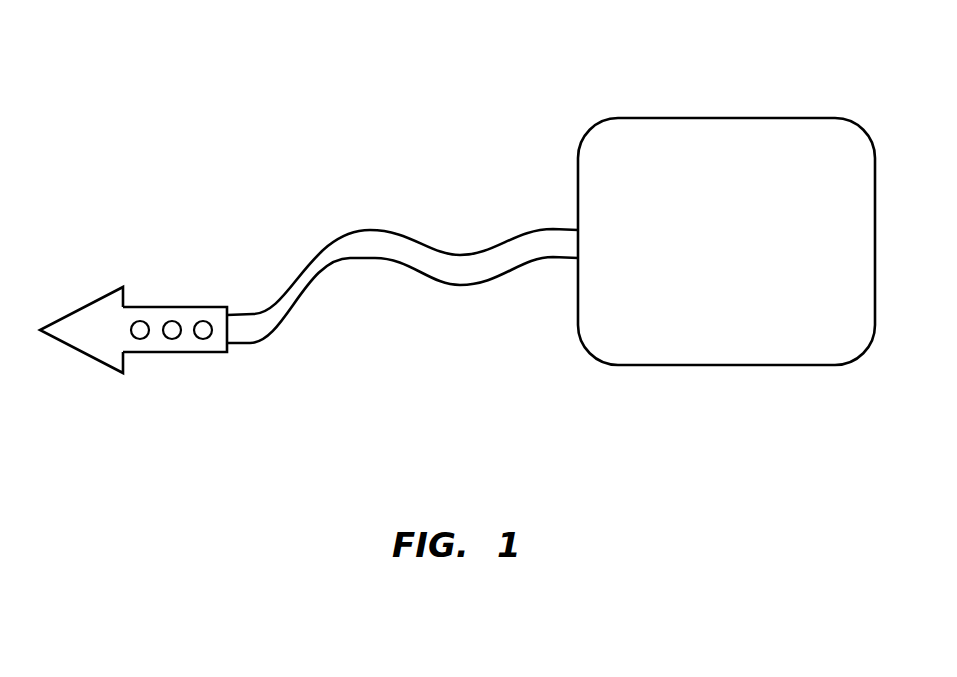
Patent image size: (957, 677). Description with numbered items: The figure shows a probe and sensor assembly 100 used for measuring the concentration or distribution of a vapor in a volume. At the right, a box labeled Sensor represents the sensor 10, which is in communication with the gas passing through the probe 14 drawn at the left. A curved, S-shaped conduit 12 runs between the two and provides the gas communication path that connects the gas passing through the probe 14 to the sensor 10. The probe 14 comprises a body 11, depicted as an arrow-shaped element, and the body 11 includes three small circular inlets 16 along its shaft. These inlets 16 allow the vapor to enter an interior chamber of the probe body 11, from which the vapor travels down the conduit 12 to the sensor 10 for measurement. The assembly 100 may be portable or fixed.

The probe and sensor assembly 100 is at (590, 74).
The sensor 10 is at (727, 118).
The conduit 12 is at (463, 254).
The probe body 11 is at (80, 354).
The probe 14 is at (171, 299).
The inlets 16 is at (204, 340).